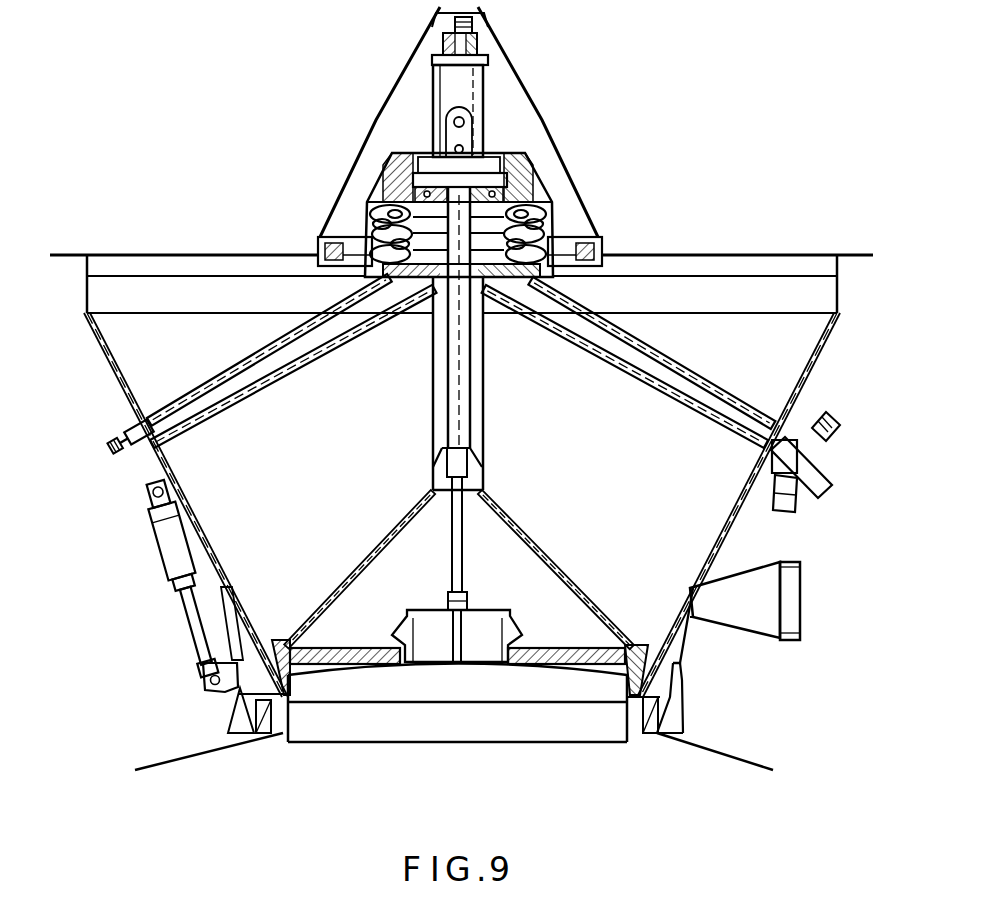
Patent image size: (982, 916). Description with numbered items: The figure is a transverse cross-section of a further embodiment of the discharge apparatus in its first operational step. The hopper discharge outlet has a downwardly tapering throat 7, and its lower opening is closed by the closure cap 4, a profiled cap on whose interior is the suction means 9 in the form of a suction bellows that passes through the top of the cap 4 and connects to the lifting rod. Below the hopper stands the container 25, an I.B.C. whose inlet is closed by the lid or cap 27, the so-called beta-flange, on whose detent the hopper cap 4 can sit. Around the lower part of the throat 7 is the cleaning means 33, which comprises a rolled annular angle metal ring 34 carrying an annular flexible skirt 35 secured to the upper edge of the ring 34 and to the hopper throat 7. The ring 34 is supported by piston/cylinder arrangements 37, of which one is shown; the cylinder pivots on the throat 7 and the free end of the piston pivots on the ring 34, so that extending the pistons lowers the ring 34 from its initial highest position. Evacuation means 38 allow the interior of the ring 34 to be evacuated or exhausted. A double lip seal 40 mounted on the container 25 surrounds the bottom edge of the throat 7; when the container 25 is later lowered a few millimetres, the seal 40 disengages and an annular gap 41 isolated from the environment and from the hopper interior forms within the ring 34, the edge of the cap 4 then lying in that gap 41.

The tapering throat 7 is at (127, 398).
The piston/cylinder arrangements 37 is at (150, 553).
The cleaning means 33 is at (178, 693).
The annular gap 41 is at (253, 681).
The container 25 is at (296, 787).
The closure cap 4 is at (348, 657).
The suction means 9 is at (517, 630).
The lid or cap 27 is at (477, 723).
The evacuation means 38 is at (792, 587).
The annular flexible skirt 35 is at (690, 642).
The rolled annular angle metal ring 34 is at (682, 680).
The double lip seal 40 is at (638, 733).